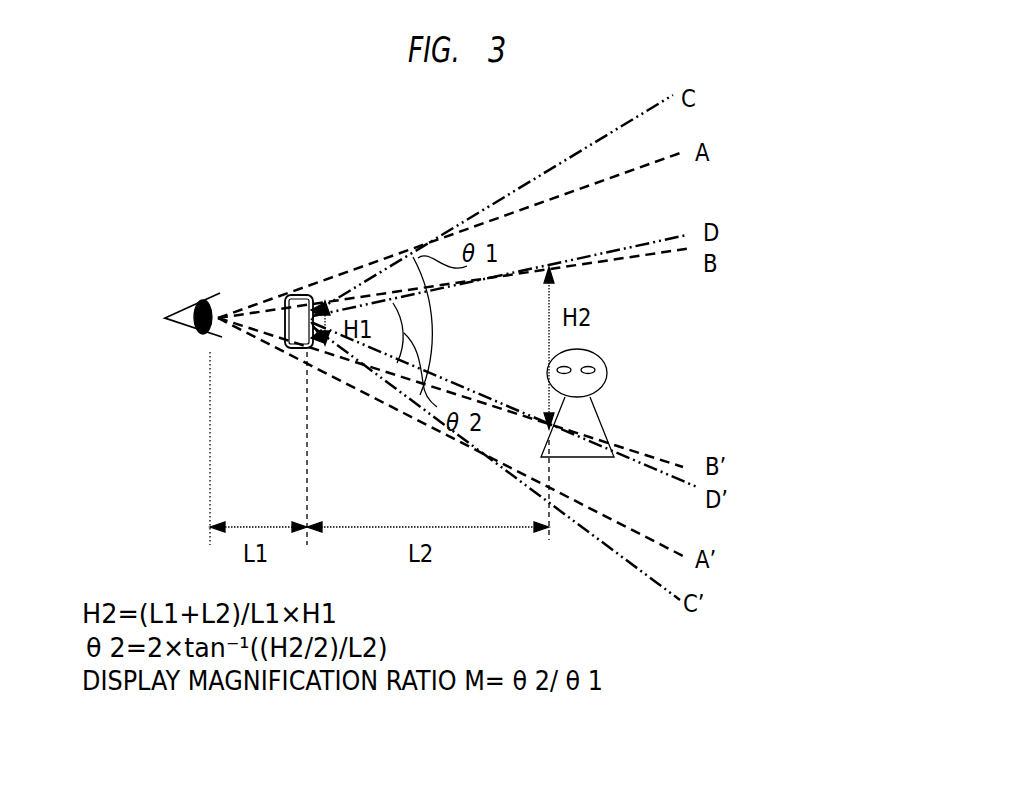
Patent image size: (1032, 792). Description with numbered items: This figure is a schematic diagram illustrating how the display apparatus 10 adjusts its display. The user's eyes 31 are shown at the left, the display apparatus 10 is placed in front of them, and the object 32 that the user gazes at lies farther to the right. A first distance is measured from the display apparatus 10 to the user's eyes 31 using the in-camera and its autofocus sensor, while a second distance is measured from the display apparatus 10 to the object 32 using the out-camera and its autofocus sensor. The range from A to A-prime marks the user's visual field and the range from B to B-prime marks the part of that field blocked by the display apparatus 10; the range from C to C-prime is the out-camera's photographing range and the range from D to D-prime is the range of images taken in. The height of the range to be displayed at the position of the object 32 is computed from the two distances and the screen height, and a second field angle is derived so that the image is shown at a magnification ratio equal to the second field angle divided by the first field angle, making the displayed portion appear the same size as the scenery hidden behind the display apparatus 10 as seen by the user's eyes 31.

The user's eyes 31 is at (208, 292).
The display apparatus 10 is at (299, 294).
The object 32 is at (607, 373).